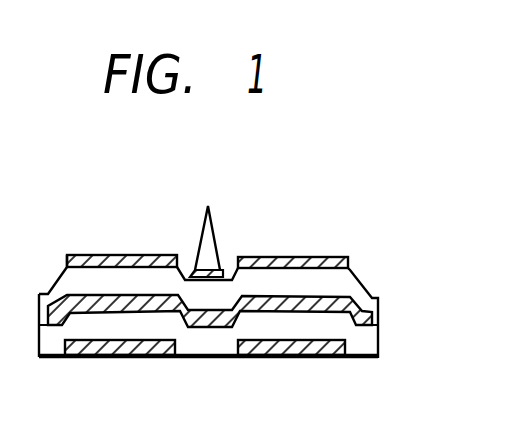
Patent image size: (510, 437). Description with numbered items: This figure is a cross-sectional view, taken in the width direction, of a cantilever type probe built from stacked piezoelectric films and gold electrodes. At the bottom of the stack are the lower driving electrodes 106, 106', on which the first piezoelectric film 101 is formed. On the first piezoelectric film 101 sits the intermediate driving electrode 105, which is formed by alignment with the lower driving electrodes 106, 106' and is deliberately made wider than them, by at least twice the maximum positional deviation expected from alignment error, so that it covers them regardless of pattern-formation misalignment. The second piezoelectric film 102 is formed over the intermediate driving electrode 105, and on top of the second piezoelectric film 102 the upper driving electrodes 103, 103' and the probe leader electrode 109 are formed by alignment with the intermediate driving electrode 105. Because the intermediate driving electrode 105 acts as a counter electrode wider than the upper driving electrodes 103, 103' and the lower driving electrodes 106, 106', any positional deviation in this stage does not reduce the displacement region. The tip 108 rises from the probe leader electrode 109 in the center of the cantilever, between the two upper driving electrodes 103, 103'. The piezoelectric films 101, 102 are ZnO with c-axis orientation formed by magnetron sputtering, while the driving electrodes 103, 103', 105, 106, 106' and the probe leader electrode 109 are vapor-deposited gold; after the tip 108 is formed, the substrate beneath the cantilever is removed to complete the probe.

The first piezoelectric film 101 is at (378, 345).
The second piezoelectric film 102 is at (380, 300).
The upper driving electrode 103 is at (122, 229).
The upper driving electrode 103' is at (299, 230).
The intermediate driving electrode 105 is at (373, 318).
The lower driving electrode 106 is at (120, 377).
The lower driving electrode 106' is at (291, 377).
The tip 108 is at (208, 206).
The probe leader electrode 109 is at (227, 268).